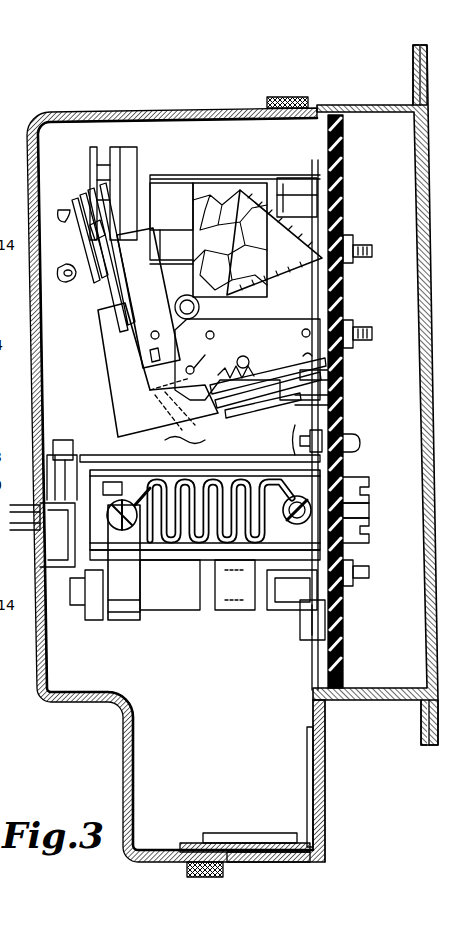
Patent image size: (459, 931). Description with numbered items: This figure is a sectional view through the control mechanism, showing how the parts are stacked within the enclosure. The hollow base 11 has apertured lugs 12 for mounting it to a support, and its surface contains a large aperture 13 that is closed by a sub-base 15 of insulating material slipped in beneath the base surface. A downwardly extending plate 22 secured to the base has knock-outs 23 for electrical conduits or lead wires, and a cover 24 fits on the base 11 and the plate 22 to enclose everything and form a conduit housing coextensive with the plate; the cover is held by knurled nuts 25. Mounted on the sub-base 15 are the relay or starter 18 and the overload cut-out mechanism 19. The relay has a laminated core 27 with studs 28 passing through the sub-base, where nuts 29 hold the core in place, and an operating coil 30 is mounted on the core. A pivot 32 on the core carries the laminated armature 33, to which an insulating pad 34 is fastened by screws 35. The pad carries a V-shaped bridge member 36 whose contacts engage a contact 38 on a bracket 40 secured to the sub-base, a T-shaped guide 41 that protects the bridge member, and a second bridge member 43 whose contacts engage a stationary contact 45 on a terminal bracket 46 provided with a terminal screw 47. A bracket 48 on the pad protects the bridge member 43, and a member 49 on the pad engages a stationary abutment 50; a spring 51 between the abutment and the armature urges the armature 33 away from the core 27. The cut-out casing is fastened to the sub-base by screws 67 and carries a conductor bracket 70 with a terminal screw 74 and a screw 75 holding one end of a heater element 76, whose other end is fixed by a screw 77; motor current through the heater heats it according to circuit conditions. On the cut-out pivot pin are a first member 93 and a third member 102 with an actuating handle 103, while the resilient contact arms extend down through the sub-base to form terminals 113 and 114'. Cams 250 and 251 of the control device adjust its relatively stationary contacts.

The hollow base 11 is at (355, 104).
The apertured lugs 12 is at (412, 52).
The large aperture 13 is at (326, 140).
The sub-base 15 is at (343, 618).
The relay or starter 18 is at (84, 379).
The overload cut-out mechanism 19 is at (75, 436).
The downwardly extending plate 22 is at (327, 798).
The knock-outs 23 is at (306, 740).
The cover 24 is at (104, 112).
The knurled nuts 25 is at (270, 98).
The laminated core 27 is at (276, 327).
The studs 28 is at (372, 251).
The nuts 29 is at (348, 240).
The operating coil 30 is at (262, 246).
The pivot 32 is at (200, 356).
The laminated armature 33 is at (158, 306).
The insulating pad 34 is at (98, 336).
The screws 35 is at (190, 437).
The V-shaped bridge member 36 is at (85, 288).
The contact 38 is at (140, 178).
The bracket 40 is at (222, 180).
The T-shaped guide 41 is at (72, 232).
The bridge member 43 is at (343, 378).
The stationary contact 45 is at (343, 404).
The terminal bracket 46 is at (348, 445).
The terminal screw 47 is at (350, 506).
The bracket 48 is at (268, 402).
The member 49 is at (268, 382).
The stationary abutment 50 is at (298, 344).
The spring 51 is at (236, 380).
The screws 67 is at (305, 582).
The conductor bracket 70 is at (132, 568).
The terminal screw 74 is at (85, 615).
The screw 75 is at (107, 515).
The heater element 76 is at (205, 510).
The screw 77 is at (297, 519).
The first member 93 is at (184, 448).
The third member 102 is at (58, 511).
The actuating handle 103 is at (20, 530).
The terminal 113 is at (355, 477).
The terminal 114' is at (377, 530).
The cam 250 is at (188, 182).
The cam 251 is at (268, 178).